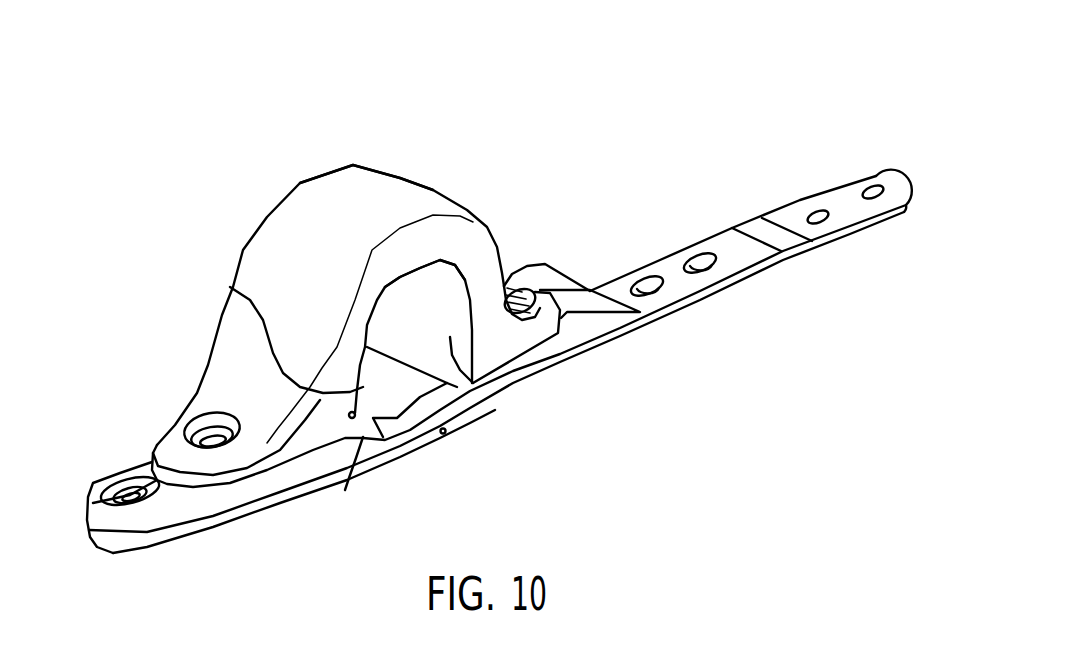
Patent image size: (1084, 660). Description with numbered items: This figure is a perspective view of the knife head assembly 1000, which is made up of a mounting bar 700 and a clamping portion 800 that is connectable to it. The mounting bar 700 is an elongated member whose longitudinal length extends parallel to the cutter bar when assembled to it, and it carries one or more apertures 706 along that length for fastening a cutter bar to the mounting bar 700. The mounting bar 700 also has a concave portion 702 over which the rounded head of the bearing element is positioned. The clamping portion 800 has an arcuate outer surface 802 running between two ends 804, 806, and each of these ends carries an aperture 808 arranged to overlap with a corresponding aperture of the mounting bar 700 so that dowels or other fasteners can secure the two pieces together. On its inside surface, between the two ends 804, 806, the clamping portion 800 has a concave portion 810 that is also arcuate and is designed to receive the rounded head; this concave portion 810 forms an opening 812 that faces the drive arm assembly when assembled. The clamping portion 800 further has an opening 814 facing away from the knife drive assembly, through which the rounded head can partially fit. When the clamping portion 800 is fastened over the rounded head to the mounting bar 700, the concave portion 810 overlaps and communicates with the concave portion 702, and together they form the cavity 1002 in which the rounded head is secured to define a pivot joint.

The knife head assembly 1000 is at (637, 68).
The mounting bar 700 is at (499, 361).
The concave portion 702 is at (256, 328).
The apertures 706 is at (880, 146).
The clamping portion 800 is at (313, 327).
The outer surface 802 is at (320, 207).
The end 804 is at (556, 280).
The end 806 is at (181, 432).
The apertures 808 is at (371, 321).
The concave portion 810 is at (488, 396).
The opening 812 is at (409, 434).
The opening 814 is at (425, 196).
The cavity 1002 is at (464, 433).